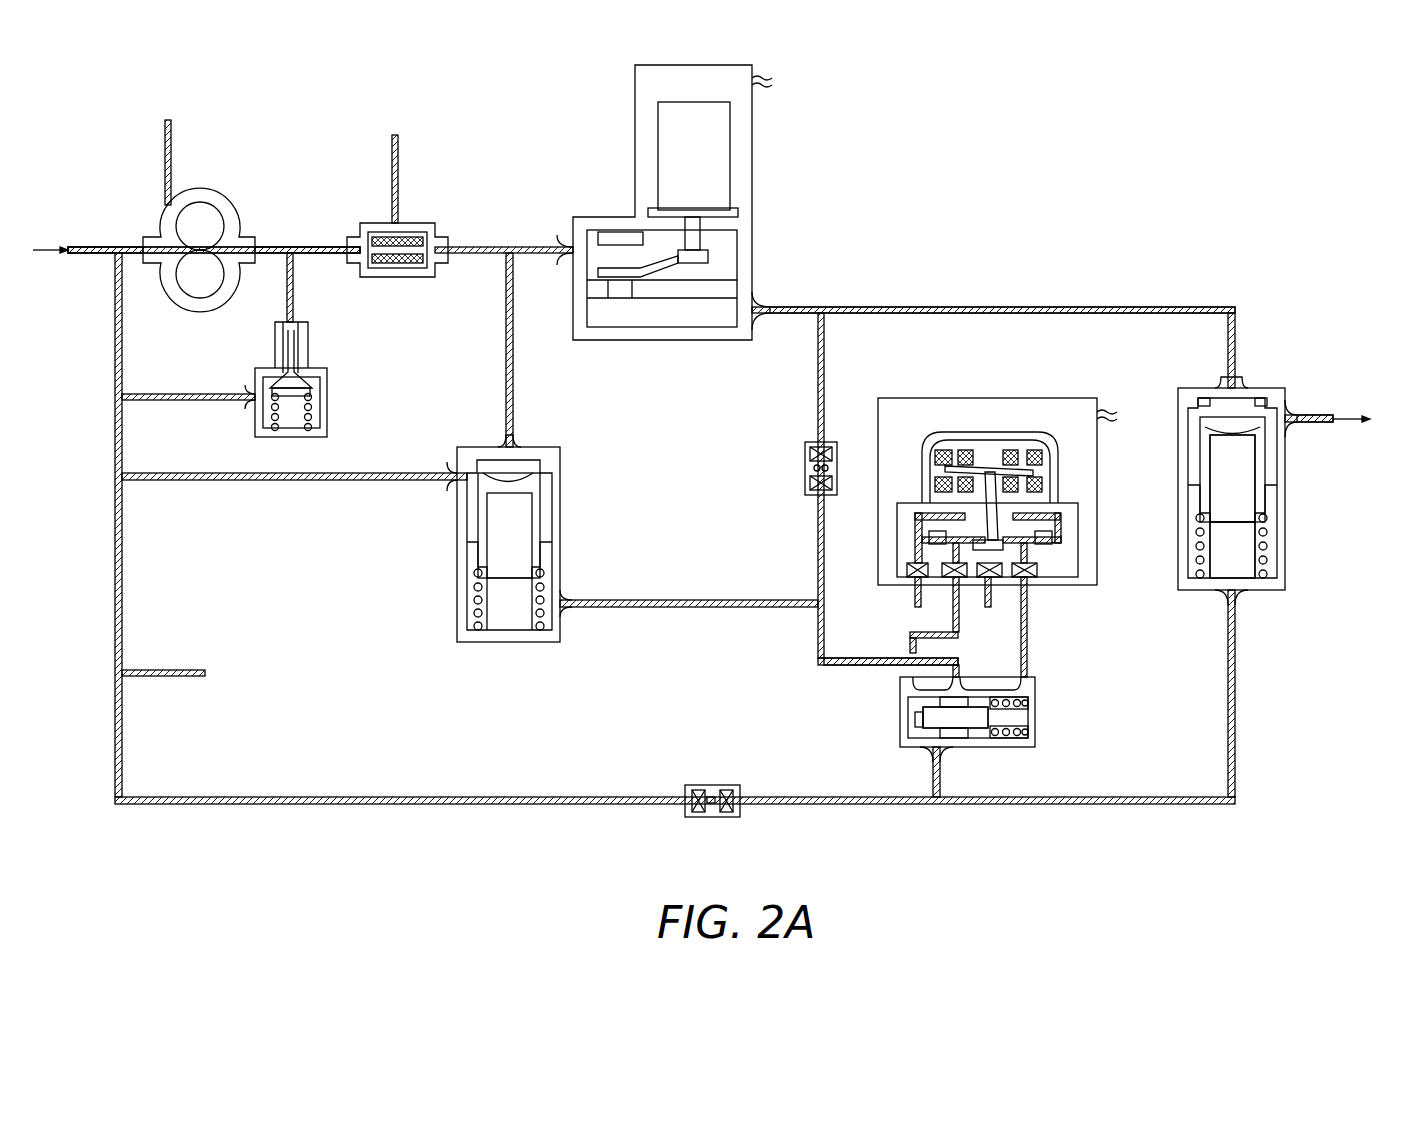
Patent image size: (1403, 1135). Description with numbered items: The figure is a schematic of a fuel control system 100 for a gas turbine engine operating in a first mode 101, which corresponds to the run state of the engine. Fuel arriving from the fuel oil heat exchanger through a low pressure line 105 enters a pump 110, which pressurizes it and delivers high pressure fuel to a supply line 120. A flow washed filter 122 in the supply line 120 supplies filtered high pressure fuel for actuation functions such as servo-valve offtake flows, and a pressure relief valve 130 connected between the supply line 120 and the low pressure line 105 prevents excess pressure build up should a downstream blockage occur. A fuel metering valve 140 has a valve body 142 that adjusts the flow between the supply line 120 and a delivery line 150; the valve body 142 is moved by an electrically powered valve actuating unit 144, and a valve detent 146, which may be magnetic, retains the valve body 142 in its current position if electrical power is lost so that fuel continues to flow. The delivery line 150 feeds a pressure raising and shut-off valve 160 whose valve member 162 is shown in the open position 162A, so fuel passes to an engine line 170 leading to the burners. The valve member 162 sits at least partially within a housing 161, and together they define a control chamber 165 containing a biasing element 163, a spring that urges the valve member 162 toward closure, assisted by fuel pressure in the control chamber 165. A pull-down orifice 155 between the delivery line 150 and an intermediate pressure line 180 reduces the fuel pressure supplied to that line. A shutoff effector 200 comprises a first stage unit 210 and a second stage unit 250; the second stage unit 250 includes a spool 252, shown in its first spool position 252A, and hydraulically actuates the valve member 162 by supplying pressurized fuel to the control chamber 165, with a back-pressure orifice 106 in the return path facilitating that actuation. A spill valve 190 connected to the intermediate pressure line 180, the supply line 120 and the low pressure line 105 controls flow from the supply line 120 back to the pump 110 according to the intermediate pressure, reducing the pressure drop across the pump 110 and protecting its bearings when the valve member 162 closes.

The fuel control system 100 is at (1178, 118).
The first mode 101 is at (1178, 118).
The low pressure line 105 is at (80, 257).
The back-pressure orifice 106 is at (707, 767).
The pump 110 is at (141, 190).
The supply line 120 is at (330, 247).
The flow washed filter 122 is at (395, 292).
The pressure relief valve 130 is at (345, 388).
The fuel metering valve 140 is at (592, 92).
The valve body 142 is at (643, 280).
The valve actuating unit 144 is at (717, 160).
The valve detent 146 is at (620, 233).
The delivery line 150 is at (1001, 307).
The pull-down orifice 155 is at (790, 464).
The pressure raising and shut-off valve 160 is at (1261, 369).
The housing 161 is at (1283, 531).
The valve member 162 is at (1262, 482).
The open position 162A is at (1306, 478).
The biasing element 163 is at (1268, 558).
The control chamber 165 is at (1234, 554).
The engine line 170 is at (1303, 413).
The intermediate pressure line 180 is at (818, 660).
The spill valve 190 is at (581, 531).
The shutoff effector 200 is at (1297, 686).
The first stage unit 210 is at (1076, 607).
The second stage unit 250 is at (1054, 707).
The spool 252 is at (978, 742).
The first spool position 252A is at (987, 777).